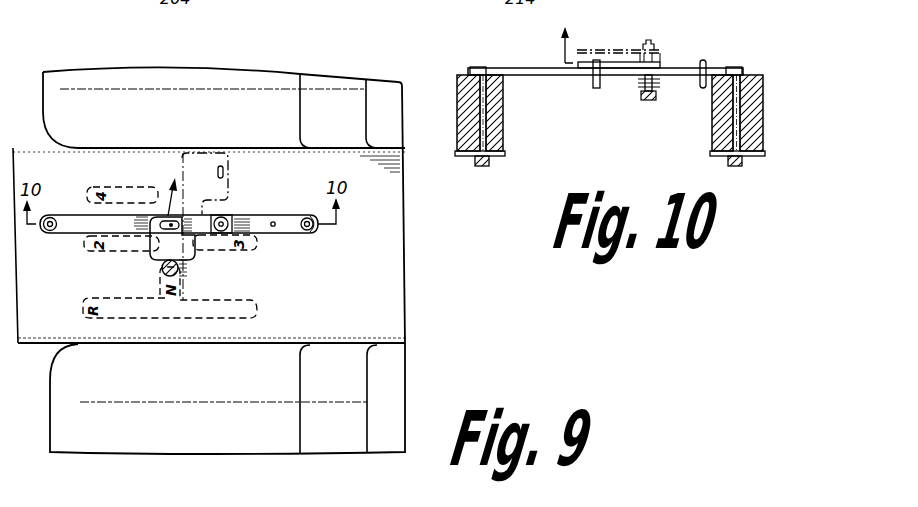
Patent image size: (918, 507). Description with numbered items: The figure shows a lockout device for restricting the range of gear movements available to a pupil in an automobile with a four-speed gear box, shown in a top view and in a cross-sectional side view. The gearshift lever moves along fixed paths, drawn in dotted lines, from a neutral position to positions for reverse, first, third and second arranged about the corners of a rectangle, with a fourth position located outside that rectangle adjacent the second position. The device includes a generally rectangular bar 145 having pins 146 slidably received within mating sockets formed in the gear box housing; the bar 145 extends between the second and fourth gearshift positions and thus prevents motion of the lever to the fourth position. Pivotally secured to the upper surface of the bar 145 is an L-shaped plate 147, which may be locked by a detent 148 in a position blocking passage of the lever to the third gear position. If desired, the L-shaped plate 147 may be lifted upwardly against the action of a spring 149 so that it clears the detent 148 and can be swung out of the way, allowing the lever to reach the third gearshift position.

In FIG. 9, the bar 145 is at (123, 240).
In FIG. 10, the bar 145 is at (533, 42).
In FIG. 10, the pins 146 is at (482, 122).
In FIG. 9, the L-shaped plate 147 is at (192, 250).
In FIG. 10, the L-shaped plate 147 is at (606, 64).
In FIG. 9, the detent 148 is at (161, 222).
In FIG. 10, the detent 148 is at (596, 87).
In FIG. 10, the spring 149 is at (658, 92).